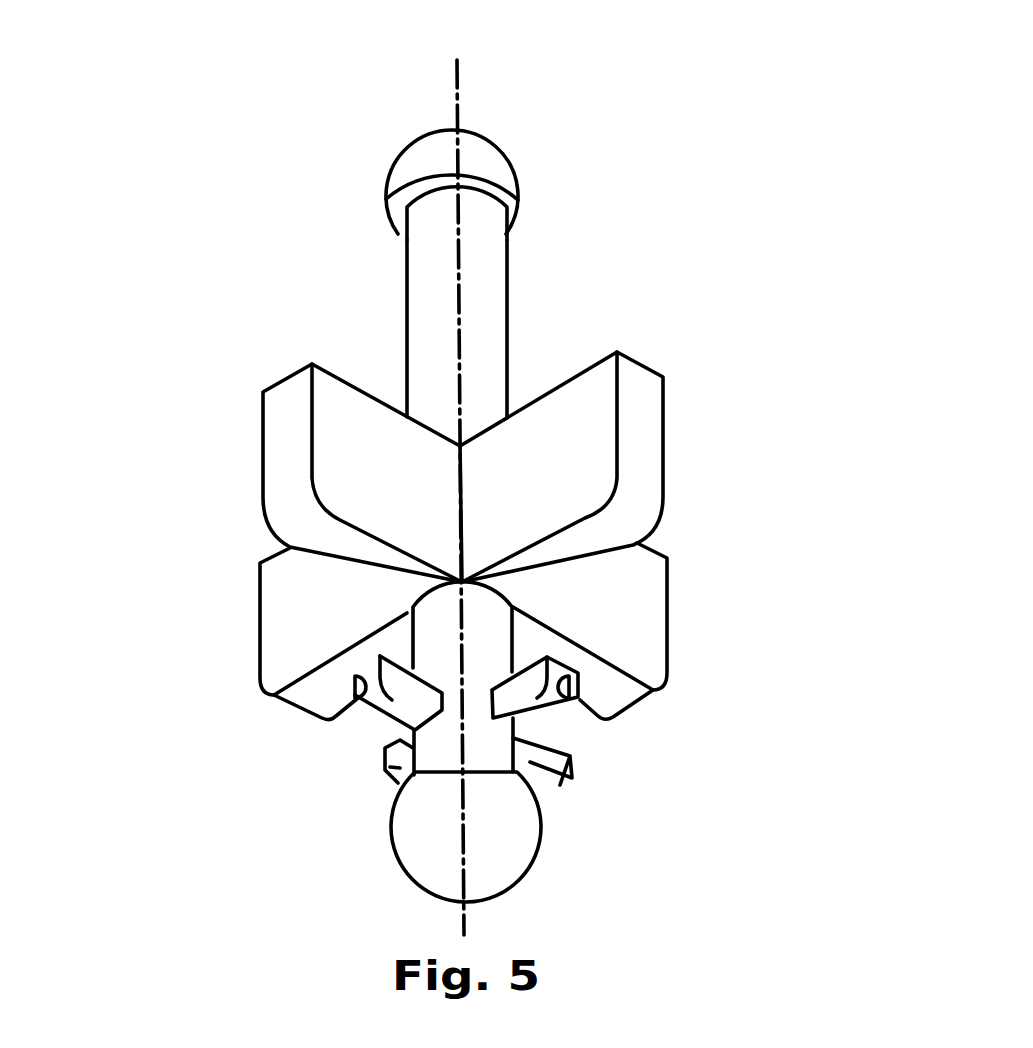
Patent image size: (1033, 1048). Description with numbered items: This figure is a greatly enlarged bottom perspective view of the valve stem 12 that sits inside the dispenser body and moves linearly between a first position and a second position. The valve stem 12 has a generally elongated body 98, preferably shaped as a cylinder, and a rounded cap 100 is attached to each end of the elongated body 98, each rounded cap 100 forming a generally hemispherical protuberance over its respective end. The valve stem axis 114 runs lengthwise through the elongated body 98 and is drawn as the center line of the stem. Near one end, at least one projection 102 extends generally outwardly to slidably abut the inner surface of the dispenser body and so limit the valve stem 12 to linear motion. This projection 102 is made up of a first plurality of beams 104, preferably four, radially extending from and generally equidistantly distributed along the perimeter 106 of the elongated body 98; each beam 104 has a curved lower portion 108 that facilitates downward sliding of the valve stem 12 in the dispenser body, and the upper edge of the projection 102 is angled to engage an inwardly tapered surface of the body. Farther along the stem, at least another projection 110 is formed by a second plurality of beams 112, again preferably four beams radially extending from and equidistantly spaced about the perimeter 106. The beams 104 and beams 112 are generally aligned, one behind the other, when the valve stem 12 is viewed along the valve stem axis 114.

The valve stem 12 is at (596, 318).
The generally elongated body 98 is at (483, 260).
The rounded cap 100 is at (483, 157).
The at least one projection 102 is at (556, 761).
The first plurality of beams 104 is at (373, 690).
The perimeter 106 is at (467, 687).
The curved lower portion 108 is at (352, 680).
The at least another projection 110 is at (668, 401).
The second plurality of beams 112 is at (427, 495).
The valve stem axis 114 is at (457, 88).